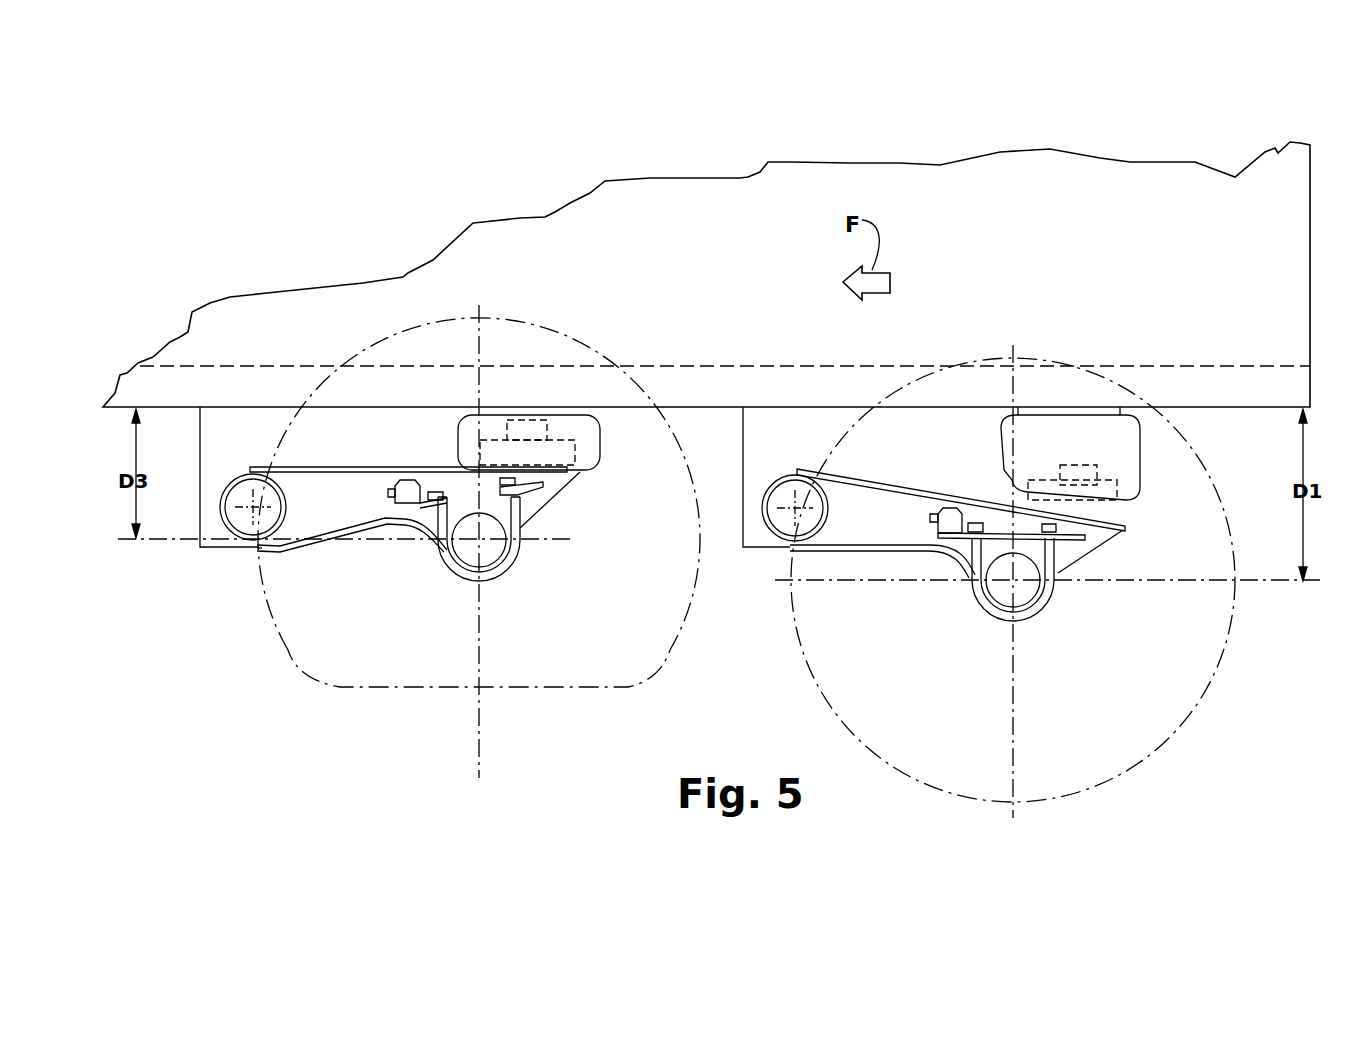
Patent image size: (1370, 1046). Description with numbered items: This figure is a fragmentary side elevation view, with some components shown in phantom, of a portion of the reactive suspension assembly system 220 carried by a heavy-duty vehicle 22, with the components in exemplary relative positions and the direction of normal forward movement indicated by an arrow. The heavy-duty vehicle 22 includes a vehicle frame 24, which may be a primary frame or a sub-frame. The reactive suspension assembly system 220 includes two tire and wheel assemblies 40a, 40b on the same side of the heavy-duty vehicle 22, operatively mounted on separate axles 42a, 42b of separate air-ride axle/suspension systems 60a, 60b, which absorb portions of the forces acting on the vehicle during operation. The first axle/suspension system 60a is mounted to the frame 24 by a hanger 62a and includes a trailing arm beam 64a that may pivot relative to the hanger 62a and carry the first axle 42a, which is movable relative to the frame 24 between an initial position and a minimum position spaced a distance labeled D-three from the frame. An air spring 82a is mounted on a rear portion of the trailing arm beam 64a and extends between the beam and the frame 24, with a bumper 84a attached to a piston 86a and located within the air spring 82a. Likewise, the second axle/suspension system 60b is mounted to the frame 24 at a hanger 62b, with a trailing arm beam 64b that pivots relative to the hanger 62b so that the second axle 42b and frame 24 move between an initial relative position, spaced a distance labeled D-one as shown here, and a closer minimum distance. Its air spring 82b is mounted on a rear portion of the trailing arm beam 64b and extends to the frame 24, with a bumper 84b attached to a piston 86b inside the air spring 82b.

The heavy-duty vehicle 22 is at (1248, 268).
The vehicle frame 24 is at (1252, 358).
The tire and wheel assembly 40a is at (537, 688).
The tire and wheel assembly 40b is at (1040, 358).
The first axle 42a is at (495, 510).
The second axle 42b is at (1050, 548).
The air-ride axle/suspension system 60a is at (376, 570).
The air-ride axle/suspension system 60b is at (900, 610).
The hanger 62a is at (243, 437).
The hanger 62b is at (793, 430).
The trailing arm beam 64a is at (330, 498).
The trailing arm beam 64b is at (880, 512).
The air spring 82a is at (600, 437).
The air spring 82b is at (1127, 438).
The bumper 84a is at (528, 428).
The bumper 84b is at (1098, 462).
The piston 86a is at (540, 448).
The piston 86b is at (1110, 508).
The reactive suspension assembly system 220 is at (245, 594).